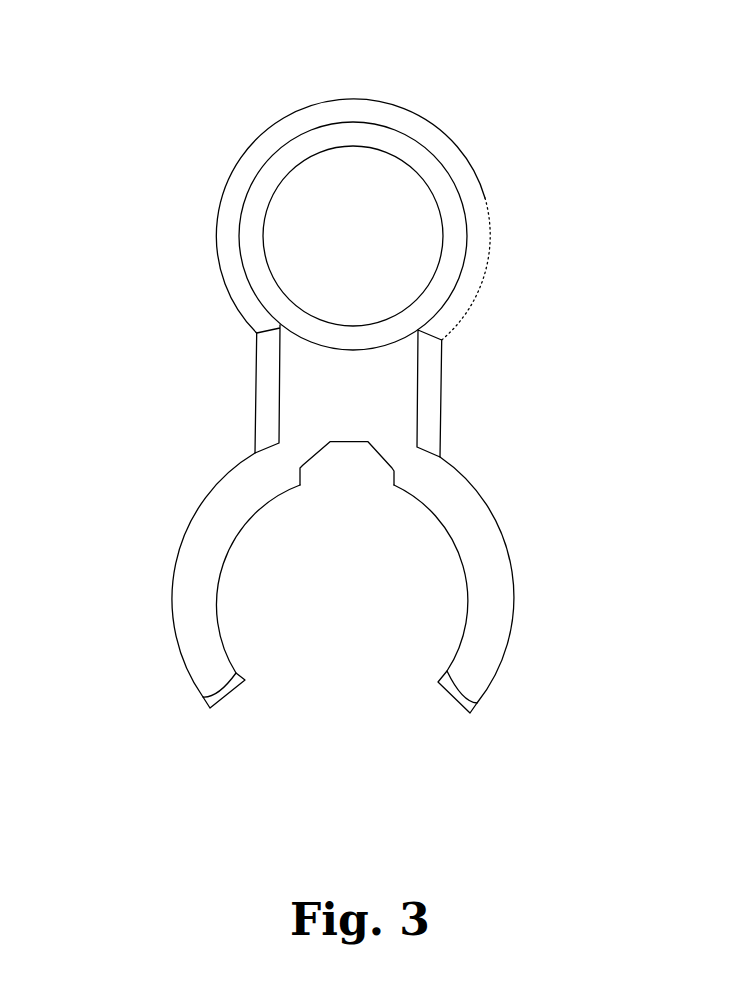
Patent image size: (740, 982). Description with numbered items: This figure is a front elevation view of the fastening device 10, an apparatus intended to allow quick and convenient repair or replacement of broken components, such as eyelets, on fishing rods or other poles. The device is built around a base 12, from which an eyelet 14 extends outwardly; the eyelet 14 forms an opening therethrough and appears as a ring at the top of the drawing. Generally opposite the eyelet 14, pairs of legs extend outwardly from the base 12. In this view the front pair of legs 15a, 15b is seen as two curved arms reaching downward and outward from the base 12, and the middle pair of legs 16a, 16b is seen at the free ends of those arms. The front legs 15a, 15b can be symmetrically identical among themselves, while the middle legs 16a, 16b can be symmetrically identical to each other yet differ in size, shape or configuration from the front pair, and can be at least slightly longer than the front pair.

The fastening device 10 is at (600, 87).
The base 12 is at (387, 392).
The eyelet 14 is at (472, 208).
The front leg 15a is at (495, 597).
The front leg 15b is at (190, 598).
The middle leg 16a is at (470, 707).
The middle leg 16b is at (210, 700).